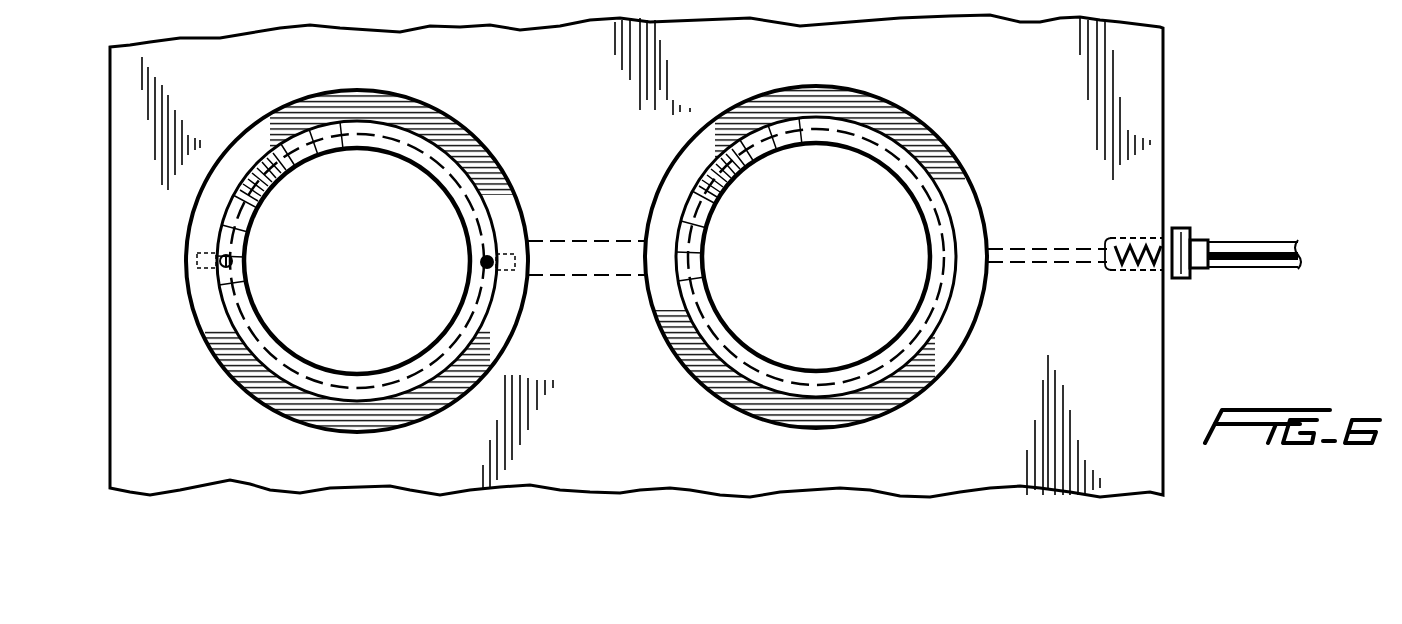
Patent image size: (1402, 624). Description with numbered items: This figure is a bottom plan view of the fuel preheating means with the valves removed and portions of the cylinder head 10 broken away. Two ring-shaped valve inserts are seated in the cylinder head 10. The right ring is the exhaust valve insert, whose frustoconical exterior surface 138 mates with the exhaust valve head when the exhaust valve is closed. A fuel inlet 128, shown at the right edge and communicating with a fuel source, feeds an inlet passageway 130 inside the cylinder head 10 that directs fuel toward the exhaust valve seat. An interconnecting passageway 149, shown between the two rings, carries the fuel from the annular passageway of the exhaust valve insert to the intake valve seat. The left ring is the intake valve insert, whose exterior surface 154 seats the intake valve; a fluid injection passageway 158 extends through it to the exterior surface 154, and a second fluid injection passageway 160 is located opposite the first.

The cylinder head 10 is at (636, 256).
The exterior surface 154 is at (497, 190).
The exterior surface 138 is at (958, 172).
The second fluid injection passageway 160 is at (200, 262).
The fluid injection passageway 158 is at (500, 272).
The interconnecting passageway 149 is at (603, 262).
The inlet passageway 130 is at (1040, 247).
The fuel inlet 128 is at (1147, 250).